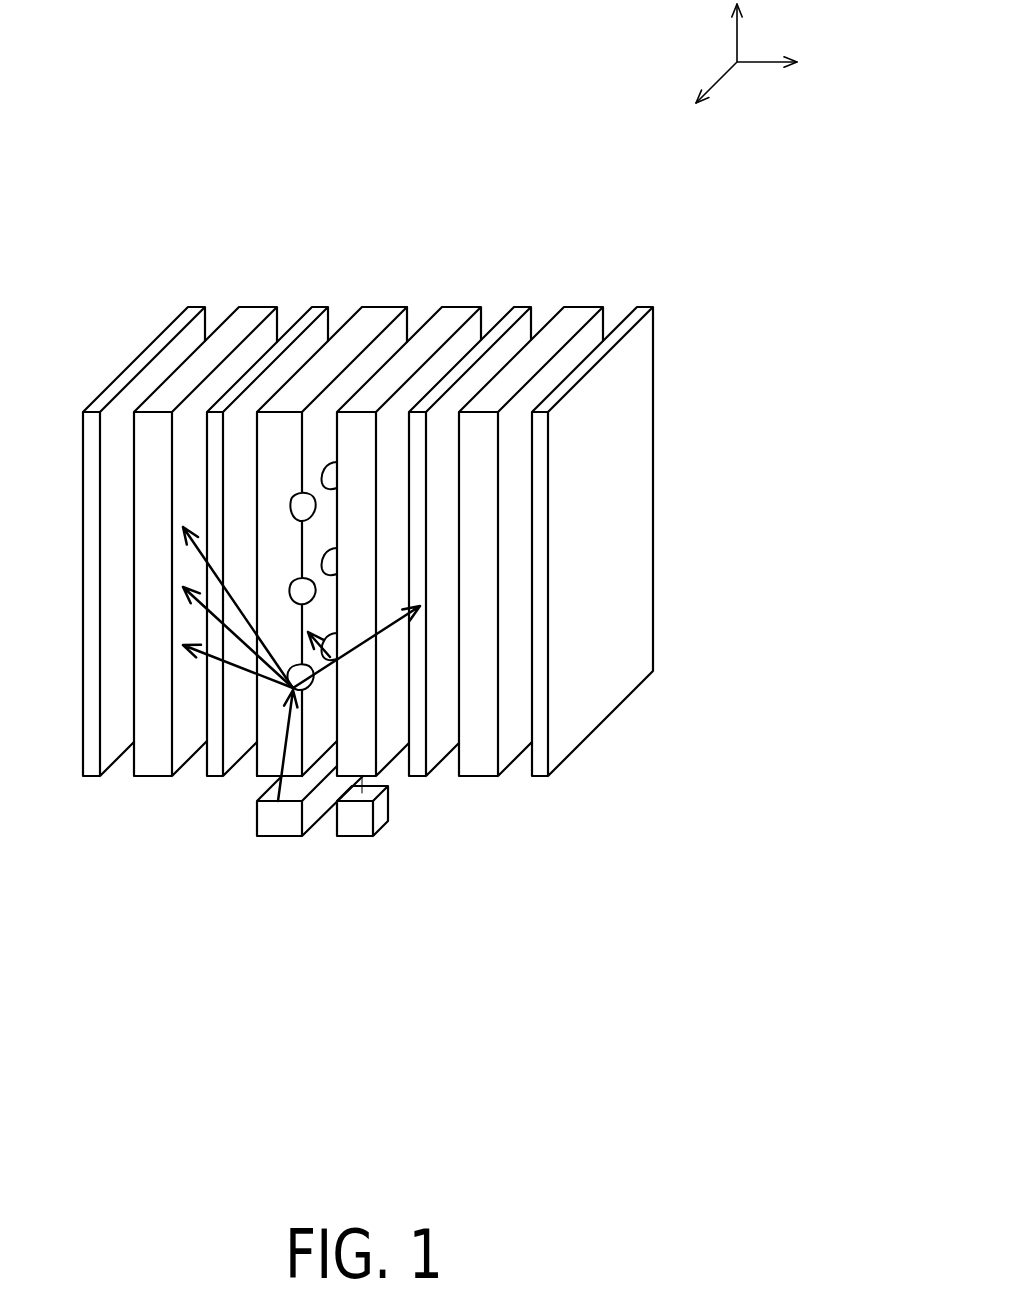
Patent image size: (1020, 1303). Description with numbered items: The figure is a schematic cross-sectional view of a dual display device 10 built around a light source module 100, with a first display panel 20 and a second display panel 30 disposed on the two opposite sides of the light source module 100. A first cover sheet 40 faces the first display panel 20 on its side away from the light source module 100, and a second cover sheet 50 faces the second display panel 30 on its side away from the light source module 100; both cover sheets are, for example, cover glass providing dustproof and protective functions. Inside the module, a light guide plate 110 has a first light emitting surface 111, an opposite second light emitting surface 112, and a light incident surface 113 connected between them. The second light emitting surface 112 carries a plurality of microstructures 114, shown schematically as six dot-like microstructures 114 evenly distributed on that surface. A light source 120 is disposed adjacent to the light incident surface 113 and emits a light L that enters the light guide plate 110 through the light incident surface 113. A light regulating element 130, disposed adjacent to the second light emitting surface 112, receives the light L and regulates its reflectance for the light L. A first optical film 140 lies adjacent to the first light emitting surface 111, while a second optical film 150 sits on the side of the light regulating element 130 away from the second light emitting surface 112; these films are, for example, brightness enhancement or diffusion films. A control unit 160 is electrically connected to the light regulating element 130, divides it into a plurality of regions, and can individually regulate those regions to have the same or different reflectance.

The dual display device 10 is at (84, 104).
The first display panel 20 is at (247, 312).
The second display panel 30 is at (582, 313).
The first cover sheet 40 is at (193, 310).
The second cover sheet 50 is at (638, 313).
The light source module 100 is at (438, 200).
The light guide plate 110 is at (481, 583).
The first light emitting surface 111 is at (342, 309).
The second light emitting surface 112 is at (402, 312).
The light incident surface 113 is at (269, 777).
The microstructures 114 is at (320, 504).
The light source 120 is at (282, 823).
The light regulating element 130 is at (457, 312).
The first optical film 140 is at (313, 312).
The second optical film 150 is at (517, 313).
The control unit 160 is at (360, 822).
The light L is at (290, 762).